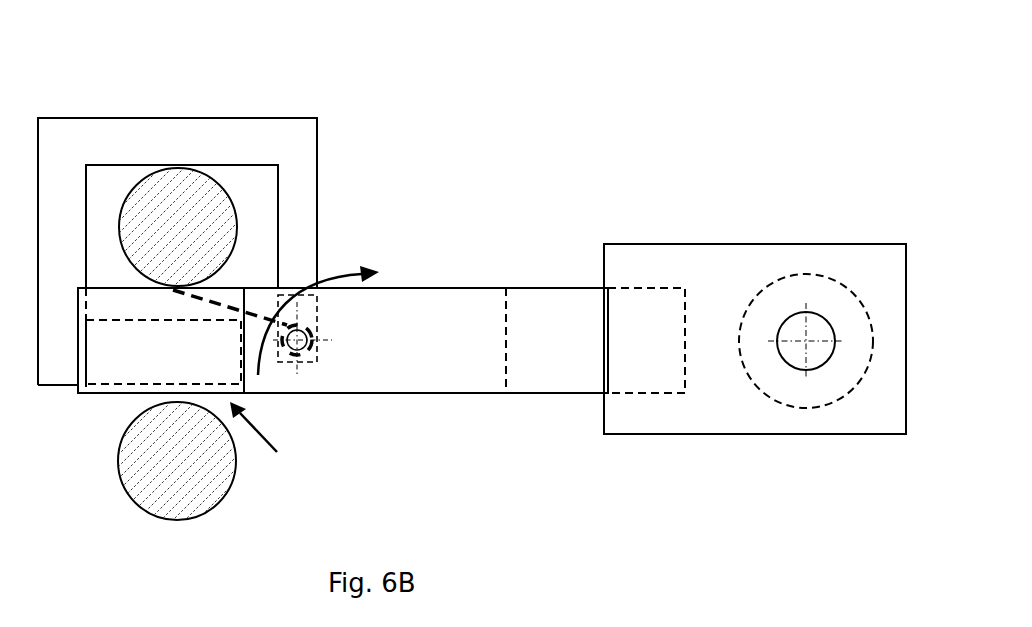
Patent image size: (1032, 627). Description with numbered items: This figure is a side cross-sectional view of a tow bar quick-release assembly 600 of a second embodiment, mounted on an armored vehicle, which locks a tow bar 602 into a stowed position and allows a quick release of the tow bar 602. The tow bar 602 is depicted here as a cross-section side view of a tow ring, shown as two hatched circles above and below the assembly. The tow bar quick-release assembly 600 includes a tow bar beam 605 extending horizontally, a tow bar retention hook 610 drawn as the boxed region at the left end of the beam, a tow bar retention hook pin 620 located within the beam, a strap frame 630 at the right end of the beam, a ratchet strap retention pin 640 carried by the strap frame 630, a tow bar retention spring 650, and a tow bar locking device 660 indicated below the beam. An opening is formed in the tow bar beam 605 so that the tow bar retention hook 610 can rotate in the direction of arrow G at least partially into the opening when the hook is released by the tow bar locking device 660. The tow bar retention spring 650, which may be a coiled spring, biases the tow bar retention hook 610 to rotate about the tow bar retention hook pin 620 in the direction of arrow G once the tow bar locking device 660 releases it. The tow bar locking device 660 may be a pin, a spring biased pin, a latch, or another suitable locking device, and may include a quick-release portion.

The tow bar quick-release assembly 600 is at (605, 106).
The tow bar 602 is at (192, 215).
The tow bar beam 605 is at (445, 367).
The tow bar retention hook 610 is at (210, 143).
The tow bar retention hook pin 620 is at (302, 350).
The strap frame 630 is at (735, 258).
The ratchet strap retention pin 640 is at (813, 327).
The tow bar retention spring 650 is at (250, 317).
The tow bar locking device 660 is at (276, 439).
The arrow G is at (342, 283).